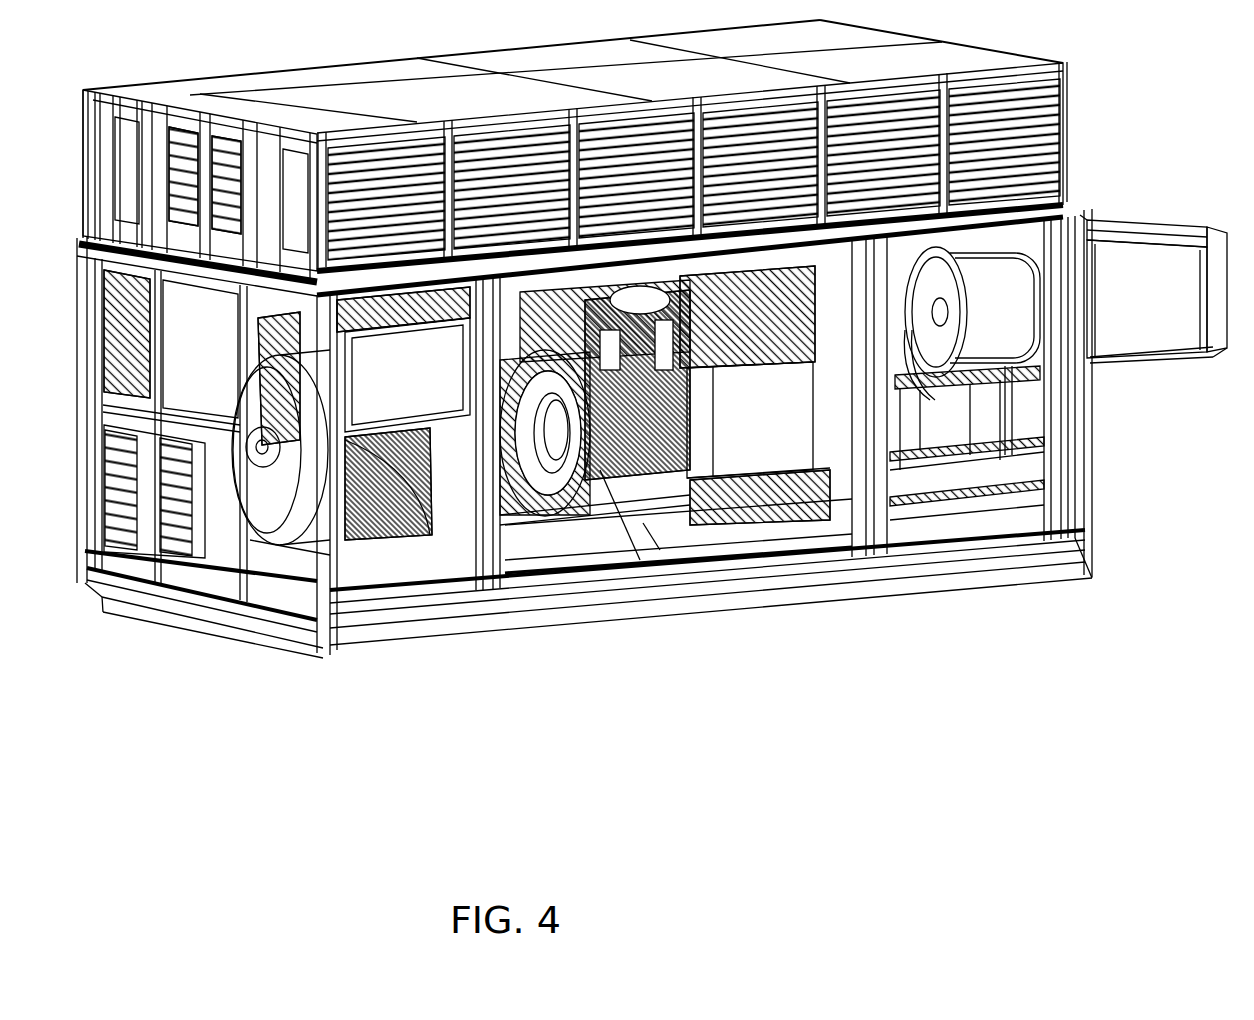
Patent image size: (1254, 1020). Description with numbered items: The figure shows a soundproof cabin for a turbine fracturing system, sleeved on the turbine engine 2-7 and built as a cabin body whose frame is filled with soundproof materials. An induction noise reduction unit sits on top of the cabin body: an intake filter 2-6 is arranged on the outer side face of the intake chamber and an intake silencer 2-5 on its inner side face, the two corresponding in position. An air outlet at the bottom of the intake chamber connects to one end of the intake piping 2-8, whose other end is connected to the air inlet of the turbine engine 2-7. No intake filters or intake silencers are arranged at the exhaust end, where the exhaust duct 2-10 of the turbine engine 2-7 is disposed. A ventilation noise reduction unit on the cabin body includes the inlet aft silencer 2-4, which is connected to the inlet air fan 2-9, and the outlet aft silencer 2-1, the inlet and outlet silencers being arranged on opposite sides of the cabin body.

The intake silencer 2-5 is at (270, 203).
The intake filter 2-6 is at (297, 368).
The exhaust duct 2-10 is at (246, 489).
The outlet aft silencer 2-1 is at (407, 394).
The turbine engine 2-7 is at (605, 486).
The intake piping 2-8 is at (771, 426).
The inlet air fan 2-9 is at (935, 356).
The inlet aft silencer 2-4 is at (1154, 336).